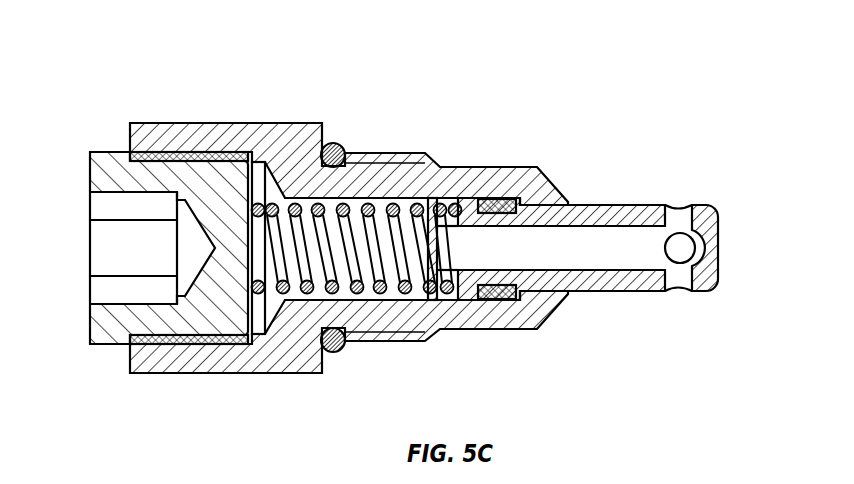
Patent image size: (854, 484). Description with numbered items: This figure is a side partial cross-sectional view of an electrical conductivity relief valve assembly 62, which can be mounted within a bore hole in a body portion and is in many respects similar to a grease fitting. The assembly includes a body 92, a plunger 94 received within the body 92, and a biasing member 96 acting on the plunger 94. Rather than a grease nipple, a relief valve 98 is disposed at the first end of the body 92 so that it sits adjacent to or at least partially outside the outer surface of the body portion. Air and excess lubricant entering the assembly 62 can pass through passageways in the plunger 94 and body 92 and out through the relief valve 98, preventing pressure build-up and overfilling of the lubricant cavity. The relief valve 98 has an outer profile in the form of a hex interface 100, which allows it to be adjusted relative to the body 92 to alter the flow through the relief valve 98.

The electrical conductivity relief valve assembly 62 is at (690, 108).
The body 92 is at (508, 163).
The plunger 94 is at (603, 198).
The biasing member 96 is at (380, 241).
The relief valve 98 is at (116, 141).
The hex interface 100 is at (112, 304).